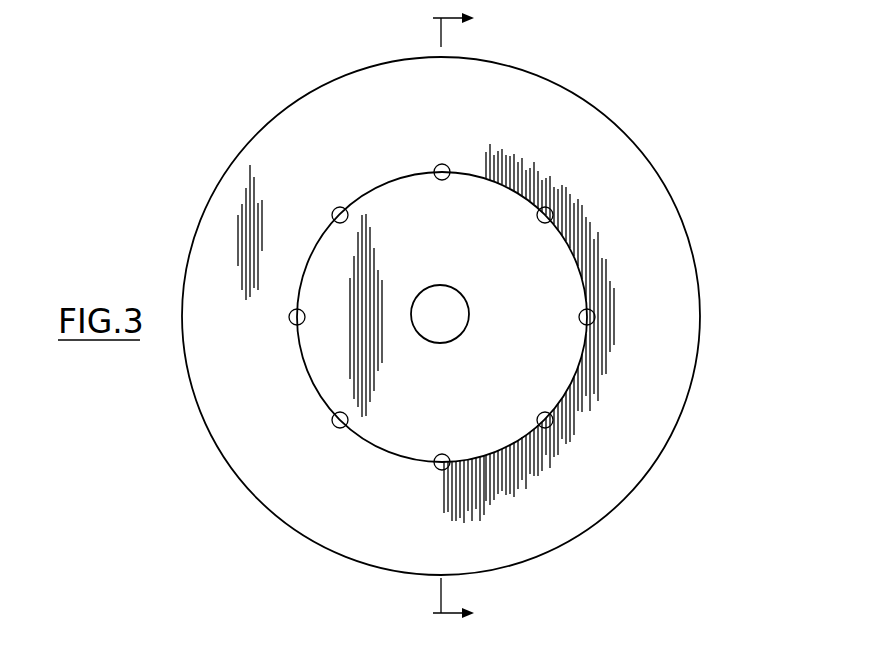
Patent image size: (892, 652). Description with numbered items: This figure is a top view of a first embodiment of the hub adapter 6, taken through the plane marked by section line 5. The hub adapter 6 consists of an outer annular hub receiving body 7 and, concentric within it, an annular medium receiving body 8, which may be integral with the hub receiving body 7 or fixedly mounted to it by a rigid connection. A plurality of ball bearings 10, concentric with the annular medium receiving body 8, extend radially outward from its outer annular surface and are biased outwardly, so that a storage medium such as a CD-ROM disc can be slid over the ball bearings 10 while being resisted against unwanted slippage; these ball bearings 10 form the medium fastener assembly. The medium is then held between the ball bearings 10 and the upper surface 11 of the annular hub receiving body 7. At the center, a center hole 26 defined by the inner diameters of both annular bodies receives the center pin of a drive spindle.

The section line 5- 5 is at (463, 318).
The hub adapter 6 is at (652, 126).
The annular hub receiving body 7 is at (672, 198).
The annular medium receiving body 8 is at (310, 381).
The ball bearings 10 is at (430, 472).
The upper surface 11 is at (560, 118).
The center hole 26 is at (450, 314).